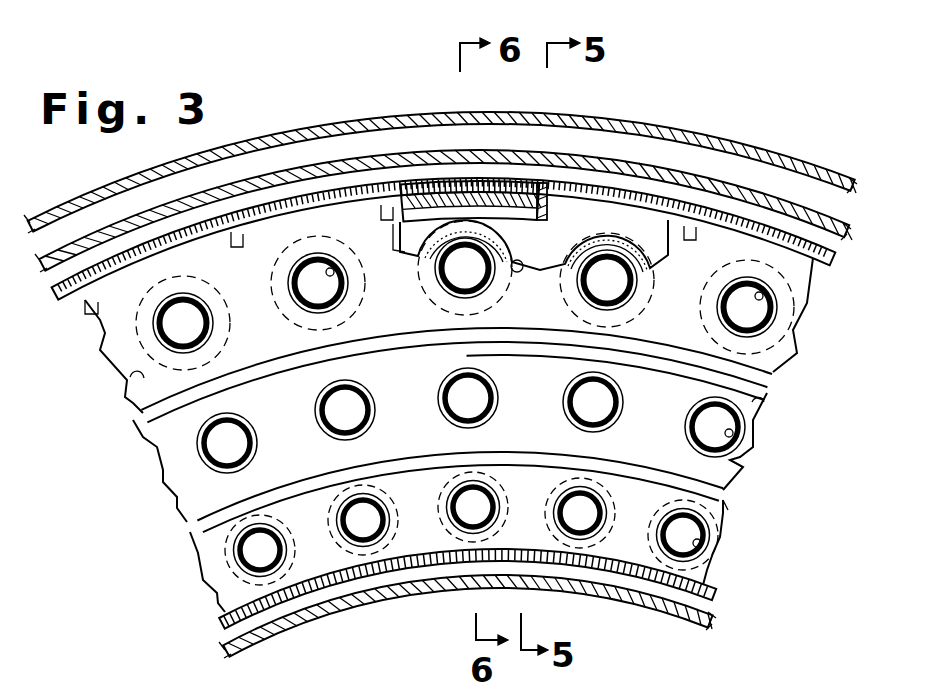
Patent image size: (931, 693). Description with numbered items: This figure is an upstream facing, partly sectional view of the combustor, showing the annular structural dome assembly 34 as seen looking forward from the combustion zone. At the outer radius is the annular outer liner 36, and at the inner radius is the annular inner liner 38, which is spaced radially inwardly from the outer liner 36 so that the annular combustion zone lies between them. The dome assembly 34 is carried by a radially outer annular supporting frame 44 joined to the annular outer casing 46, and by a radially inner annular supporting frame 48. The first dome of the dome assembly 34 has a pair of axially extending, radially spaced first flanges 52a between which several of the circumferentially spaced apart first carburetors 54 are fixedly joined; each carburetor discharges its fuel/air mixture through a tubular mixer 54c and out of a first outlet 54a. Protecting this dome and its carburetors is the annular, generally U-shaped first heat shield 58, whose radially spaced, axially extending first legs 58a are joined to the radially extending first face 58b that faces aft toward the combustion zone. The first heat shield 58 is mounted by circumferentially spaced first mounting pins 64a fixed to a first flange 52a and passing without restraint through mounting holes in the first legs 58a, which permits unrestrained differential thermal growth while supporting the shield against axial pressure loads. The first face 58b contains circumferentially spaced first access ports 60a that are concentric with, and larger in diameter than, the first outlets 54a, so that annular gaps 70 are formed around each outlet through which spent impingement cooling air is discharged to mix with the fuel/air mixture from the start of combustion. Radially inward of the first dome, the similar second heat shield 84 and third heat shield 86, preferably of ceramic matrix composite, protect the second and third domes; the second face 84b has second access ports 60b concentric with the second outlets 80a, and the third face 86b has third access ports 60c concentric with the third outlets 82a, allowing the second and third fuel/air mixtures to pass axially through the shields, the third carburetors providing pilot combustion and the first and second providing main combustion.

The dome assembly 34 is at (112, 450).
The outer liner 36 is at (612, 186).
The inner liner 38 is at (212, 622).
The outer supporting frame 44 is at (373, 157).
The outer casing 46 is at (354, 121).
The inner supporting frame 48 is at (222, 650).
The first flanges 52a is at (560, 238).
The first carburetors 54 is at (270, 290).
The first outlets 54a is at (338, 273).
The mixer 54c is at (508, 274).
The first heat shield 58 is at (98, 350).
The first legs 58a is at (438, 207).
The first face 58b is at (130, 378).
The first access ports 60a is at (777, 305).
The second access ports 60b is at (706, 555).
The third access ports 60c is at (742, 461).
The first mounting pins 64a is at (542, 193).
The annular gaps 70 is at (776, 327).
The second outlets 80a is at (695, 542).
The third outlets 82a is at (731, 429).
The second heat shield 84 is at (203, 572).
The second face 84b is at (725, 512).
The third heat shield 86 is at (163, 482).
The third face 86b is at (765, 402).